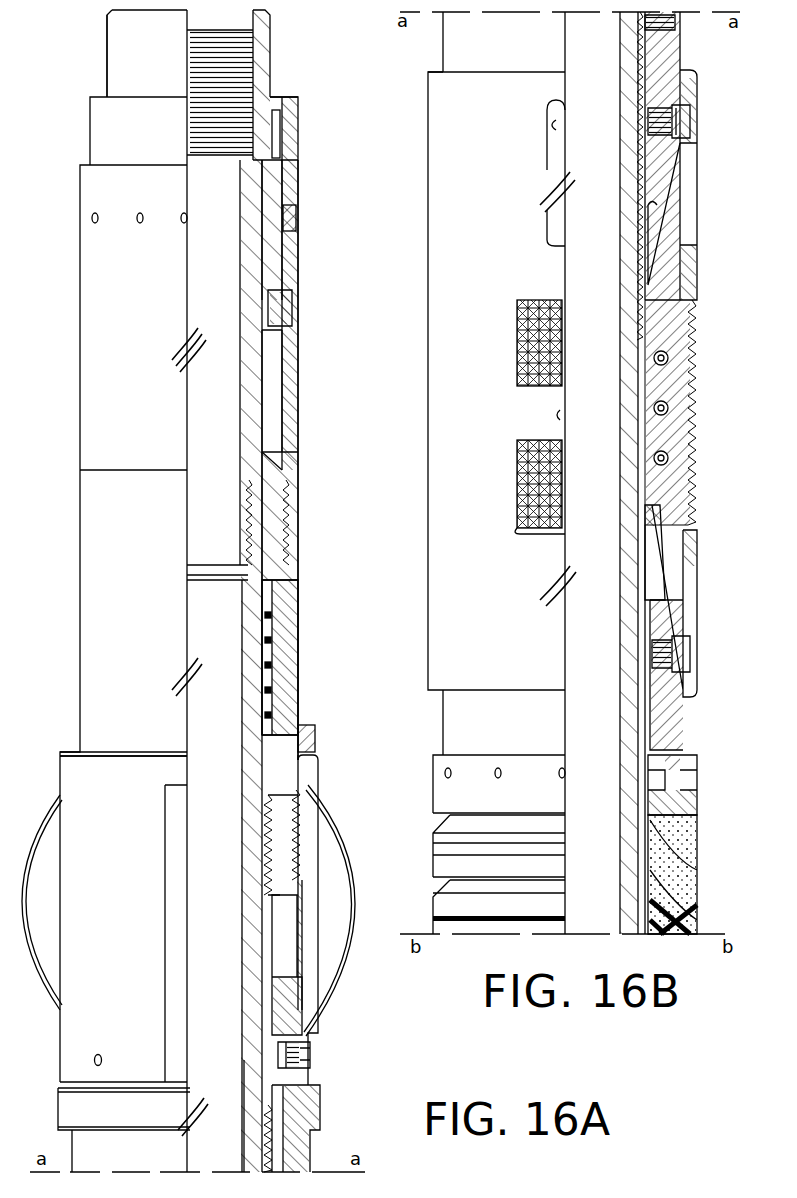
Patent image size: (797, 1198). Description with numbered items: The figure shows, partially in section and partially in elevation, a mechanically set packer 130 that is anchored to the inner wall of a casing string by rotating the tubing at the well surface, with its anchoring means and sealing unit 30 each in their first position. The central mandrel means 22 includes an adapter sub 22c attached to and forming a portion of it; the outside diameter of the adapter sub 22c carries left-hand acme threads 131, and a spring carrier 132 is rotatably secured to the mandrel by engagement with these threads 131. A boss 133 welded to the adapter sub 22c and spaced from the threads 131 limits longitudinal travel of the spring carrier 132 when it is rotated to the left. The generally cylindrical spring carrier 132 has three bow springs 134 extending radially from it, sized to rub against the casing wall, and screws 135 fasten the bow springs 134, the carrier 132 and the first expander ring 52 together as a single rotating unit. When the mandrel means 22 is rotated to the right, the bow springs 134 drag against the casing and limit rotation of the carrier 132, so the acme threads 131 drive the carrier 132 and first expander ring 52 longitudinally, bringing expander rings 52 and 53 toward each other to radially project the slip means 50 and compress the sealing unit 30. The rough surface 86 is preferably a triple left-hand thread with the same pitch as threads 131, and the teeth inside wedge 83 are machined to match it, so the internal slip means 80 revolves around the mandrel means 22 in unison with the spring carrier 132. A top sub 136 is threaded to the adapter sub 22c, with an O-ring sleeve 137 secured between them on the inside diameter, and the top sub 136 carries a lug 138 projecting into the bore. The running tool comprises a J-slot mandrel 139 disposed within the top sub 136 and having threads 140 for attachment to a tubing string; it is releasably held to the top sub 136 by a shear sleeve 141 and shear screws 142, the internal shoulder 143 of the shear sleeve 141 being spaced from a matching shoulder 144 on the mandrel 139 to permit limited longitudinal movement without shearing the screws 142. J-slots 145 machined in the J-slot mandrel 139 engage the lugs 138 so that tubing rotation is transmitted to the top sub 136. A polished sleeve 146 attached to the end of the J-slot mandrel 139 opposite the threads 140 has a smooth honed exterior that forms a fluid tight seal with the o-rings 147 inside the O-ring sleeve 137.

In FIG. 16A, the packer 130 is at (297, 67).
In FIG. 16B, the packer 130 is at (412, 70).
In FIG. 16A, the threads 140 is at (250, 68).
In FIG. 16A, the internal shoulder 143 is at (284, 120).
In FIG. 16A, the shear sleeve 141 is at (288, 138).
In FIG. 16A, the matching shoulder 144 is at (290, 152).
In FIG. 16A, the J-slot mandrel 139 is at (265, 195).
In FIG. 16A, the shear screws 142 is at (296, 220).
In FIG. 16A, the lug 138 is at (292, 310).
In FIG. 16A, the J-slots 145 is at (272, 410).
In FIG. 16A, the top sub 136 is at (290, 428).
In FIG. 16A, the O-ring sleeve 137 is at (276, 666).
In FIG. 16A, the o-rings 147 is at (266, 692).
In FIG. 16A, the adapter sub 22c is at (290, 706).
In FIG. 16A, the boss 133 is at (312, 730).
In FIG. 16A, the spring carrier 132 is at (312, 776).
In FIG. 16A, the left-hand acme threads 131 is at (296, 832).
In FIG. 16A, the bow springs 134 is at (37, 828).
In FIG. 16A, the polished sleeve 146 is at (248, 745).
In FIG. 16B, the polished sleeve 146 is at (628, 790).
In FIG. 16A, the mandrel means 22 is at (276, 930).
In FIG. 16B, the mandrel means 22 is at (680, 808).
In FIG. 16A, the internal slip means 80 is at (252, 1098).
In FIG. 16A, the screws 135 is at (310, 1058).
In FIG. 16A, the first expander ring 52 is at (312, 1108).
In FIG. 16B, the first expander ring 52 is at (665, 56).
In FIG. 16A, the wedge 83 is at (284, 1160).
In FIG. 16B, the rough surface 86 is at (648, 250).
In FIG. 16B, the slip means 50 is at (676, 462).
In FIG. 16B, the second expander ring 53 is at (668, 732).
In FIG. 16B, the sealing unit 30 is at (716, 874).